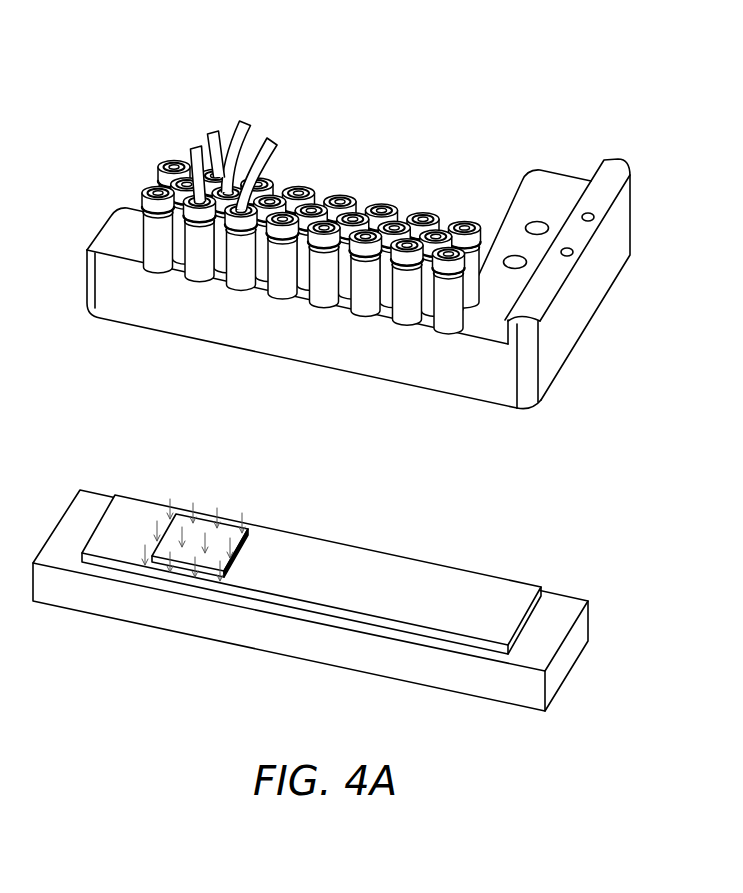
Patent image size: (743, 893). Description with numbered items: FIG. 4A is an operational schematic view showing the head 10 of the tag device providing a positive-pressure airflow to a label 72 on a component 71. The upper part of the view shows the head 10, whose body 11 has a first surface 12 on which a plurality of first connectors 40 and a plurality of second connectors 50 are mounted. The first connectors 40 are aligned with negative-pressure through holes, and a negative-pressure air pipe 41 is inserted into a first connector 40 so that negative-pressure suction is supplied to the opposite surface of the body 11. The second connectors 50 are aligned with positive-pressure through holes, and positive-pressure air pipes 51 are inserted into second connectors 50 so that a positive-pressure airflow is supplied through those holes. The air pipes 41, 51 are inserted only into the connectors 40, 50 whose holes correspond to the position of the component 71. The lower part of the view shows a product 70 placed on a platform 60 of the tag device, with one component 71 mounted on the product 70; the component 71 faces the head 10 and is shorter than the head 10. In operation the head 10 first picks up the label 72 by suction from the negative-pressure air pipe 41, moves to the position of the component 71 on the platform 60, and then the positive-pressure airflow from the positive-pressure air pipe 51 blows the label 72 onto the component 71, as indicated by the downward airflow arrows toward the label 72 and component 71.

The head 10 is at (456, 95).
The body 11 is at (618, 218).
The first surface 12 is at (110, 232).
The first connector 40 is at (222, 263).
The negative-pressure air pipe 41 is at (250, 128).
The second connector 50 is at (197, 263).
The positive-pressure air pipe 51 is at (197, 157).
The platform 60 is at (177, 617).
The product 70 is at (409, 580).
The component 71 is at (250, 538).
The label 72 is at (180, 521).